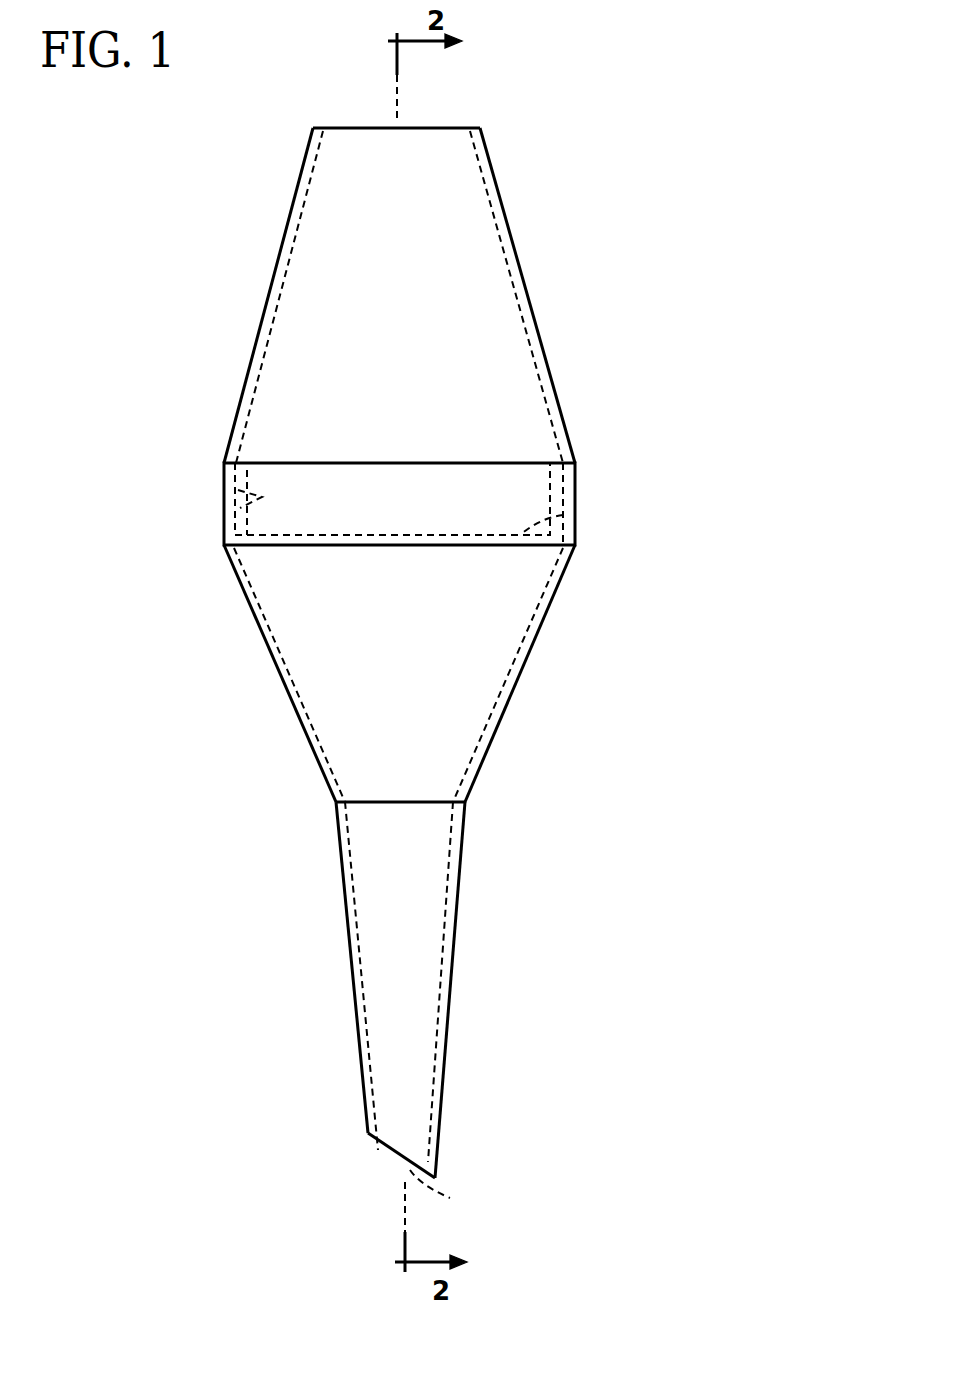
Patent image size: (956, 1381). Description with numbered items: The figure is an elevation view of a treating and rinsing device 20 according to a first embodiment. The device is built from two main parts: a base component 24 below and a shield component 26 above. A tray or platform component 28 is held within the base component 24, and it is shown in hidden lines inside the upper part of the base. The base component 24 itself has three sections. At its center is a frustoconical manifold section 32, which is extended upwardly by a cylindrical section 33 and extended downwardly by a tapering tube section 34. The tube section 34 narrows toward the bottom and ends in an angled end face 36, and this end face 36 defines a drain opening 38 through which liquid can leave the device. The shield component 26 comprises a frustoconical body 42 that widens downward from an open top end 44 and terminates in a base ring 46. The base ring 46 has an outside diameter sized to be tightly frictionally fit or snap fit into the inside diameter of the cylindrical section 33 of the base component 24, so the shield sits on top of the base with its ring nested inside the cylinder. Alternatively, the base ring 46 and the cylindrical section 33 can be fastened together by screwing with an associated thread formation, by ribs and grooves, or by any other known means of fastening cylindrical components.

The treating and rinsing device 20 is at (427, 653).
The shield component 26 is at (432, 277).
The frustoconical body 42 is at (497, 182).
The open top end 44 is at (462, 128).
The cylindrical section 33 is at (405, 504).
The tray or platform component 28 is at (578, 515).
The base ring 46 is at (222, 520).
The base component 24 is at (414, 673).
The frustoconical manifold section 32 is at (492, 748).
The tapering tube section 34 is at (432, 1008).
The angled end face 36 is at (388, 1148).
The drain opening 38 is at (450, 1192).